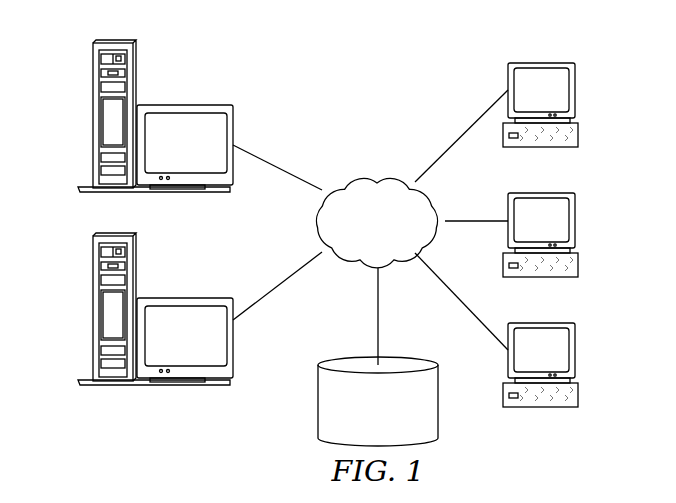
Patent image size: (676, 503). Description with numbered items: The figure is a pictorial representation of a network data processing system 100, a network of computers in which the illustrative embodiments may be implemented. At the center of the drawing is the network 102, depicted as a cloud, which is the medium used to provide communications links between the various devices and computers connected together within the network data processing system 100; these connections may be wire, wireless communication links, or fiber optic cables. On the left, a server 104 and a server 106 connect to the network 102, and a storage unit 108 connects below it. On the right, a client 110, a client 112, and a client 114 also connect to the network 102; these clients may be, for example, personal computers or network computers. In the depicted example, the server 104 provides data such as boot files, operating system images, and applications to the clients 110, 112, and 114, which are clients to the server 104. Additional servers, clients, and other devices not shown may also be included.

The network data processing system 100 is at (421, 74).
The network 102 is at (352, 175).
The server 104 is at (93, 120).
The server 106 is at (93, 313).
The storage unit 108 is at (318, 409).
The client 110 is at (576, 90).
The client 112 is at (576, 221).
The client 114 is at (577, 351).